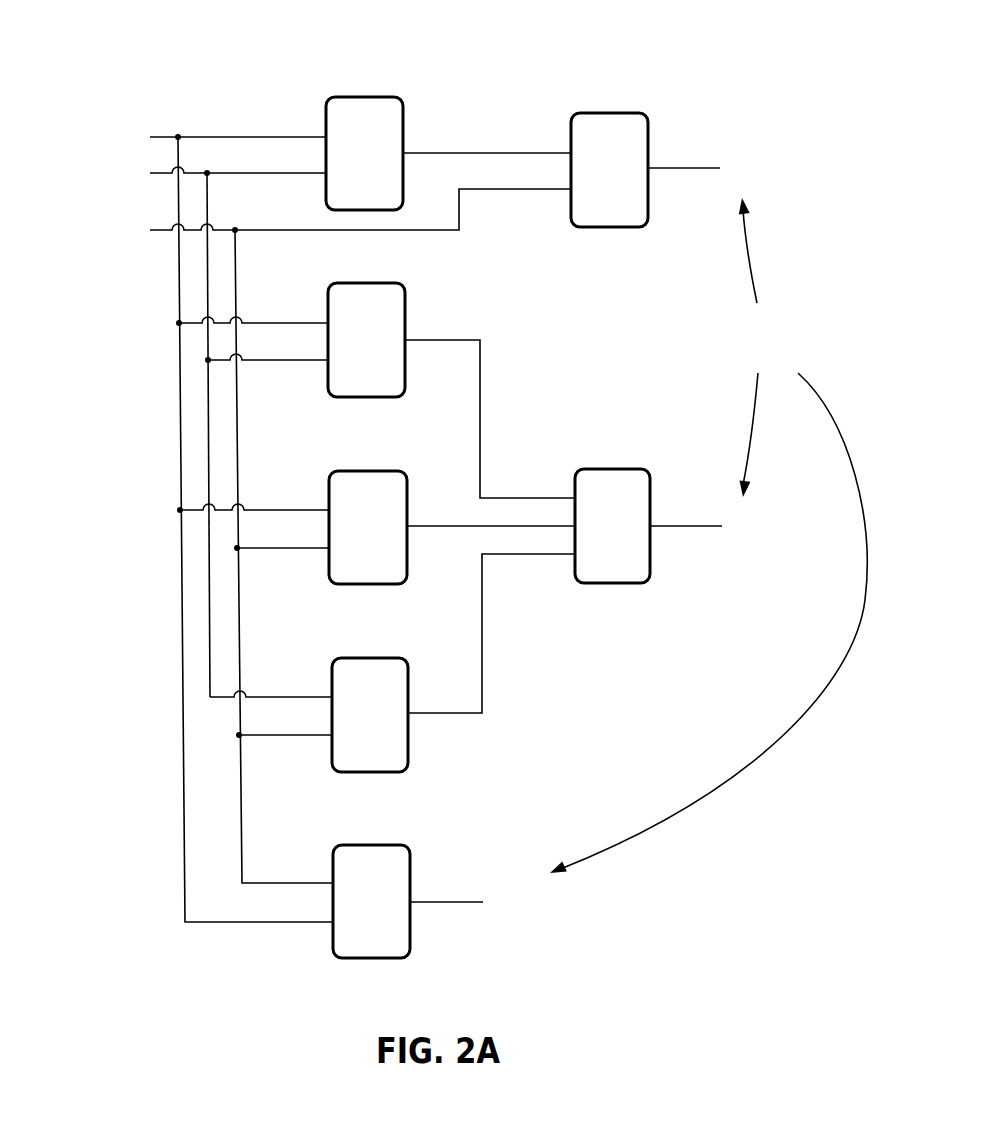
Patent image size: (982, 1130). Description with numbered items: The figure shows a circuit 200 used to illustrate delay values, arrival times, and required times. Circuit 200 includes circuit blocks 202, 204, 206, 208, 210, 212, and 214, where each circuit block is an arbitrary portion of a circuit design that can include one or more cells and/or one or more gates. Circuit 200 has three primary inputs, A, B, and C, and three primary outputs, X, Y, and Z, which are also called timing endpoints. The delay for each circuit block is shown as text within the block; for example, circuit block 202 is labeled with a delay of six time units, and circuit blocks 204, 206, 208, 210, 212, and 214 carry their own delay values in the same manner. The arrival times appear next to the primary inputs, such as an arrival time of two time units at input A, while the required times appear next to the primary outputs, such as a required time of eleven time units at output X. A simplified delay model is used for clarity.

The circuit 200 is at (473, 32).
The circuit block 202 is at (364, 138).
The circuit block 204 is at (366, 325).
The circuit block 206 is at (368, 512).
The circuit block 208 is at (370, 700).
The circuit block 210 is at (371, 886).
The circuit block 212 is at (609, 155).
The circuit block 214 is at (612, 511).